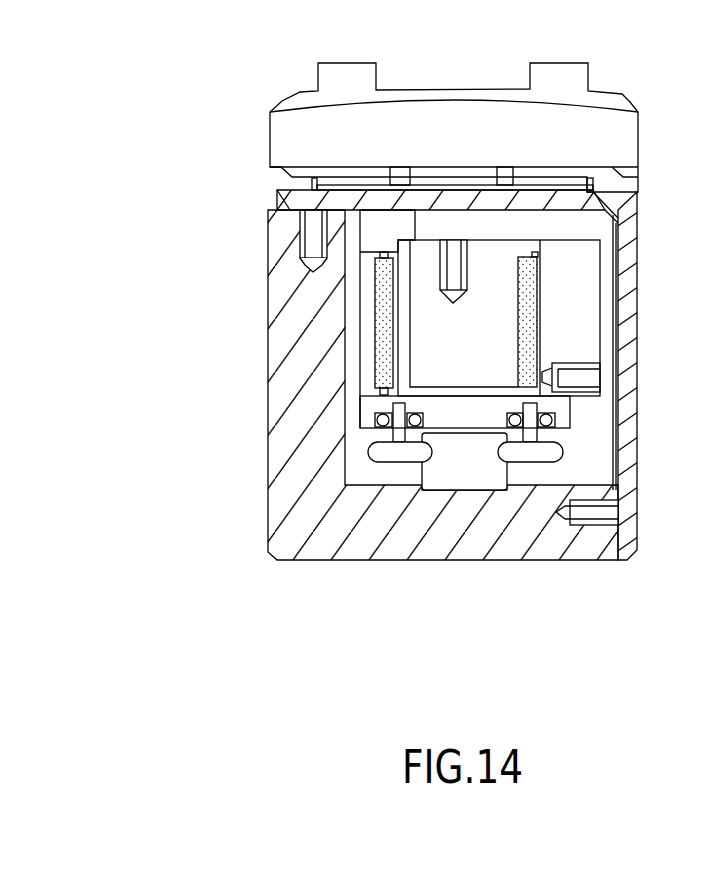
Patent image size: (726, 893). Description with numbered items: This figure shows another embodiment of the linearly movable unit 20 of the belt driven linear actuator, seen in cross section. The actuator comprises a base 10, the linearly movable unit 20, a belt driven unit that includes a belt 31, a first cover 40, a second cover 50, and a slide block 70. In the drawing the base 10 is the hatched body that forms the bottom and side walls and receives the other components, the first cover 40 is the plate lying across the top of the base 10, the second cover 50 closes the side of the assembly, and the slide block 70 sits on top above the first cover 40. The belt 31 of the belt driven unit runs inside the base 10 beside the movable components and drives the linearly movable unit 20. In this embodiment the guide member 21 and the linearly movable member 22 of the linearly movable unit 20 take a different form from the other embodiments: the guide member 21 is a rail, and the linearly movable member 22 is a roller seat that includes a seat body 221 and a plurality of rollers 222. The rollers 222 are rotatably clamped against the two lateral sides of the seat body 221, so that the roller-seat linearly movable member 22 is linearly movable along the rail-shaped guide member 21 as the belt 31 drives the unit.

The base 10 is at (265, 336).
The linearly movable unit 20 is at (489, 552).
The guide member 21 is at (467, 478).
The linearly movable member 22 is at (554, 530).
The seat body 221 is at (562, 412).
The rollers 222 is at (533, 452).
The belt 31 is at (527, 322).
The first cover 40 is at (276, 195).
The second cover 50 is at (647, 403).
The slide block 70 is at (299, 91).